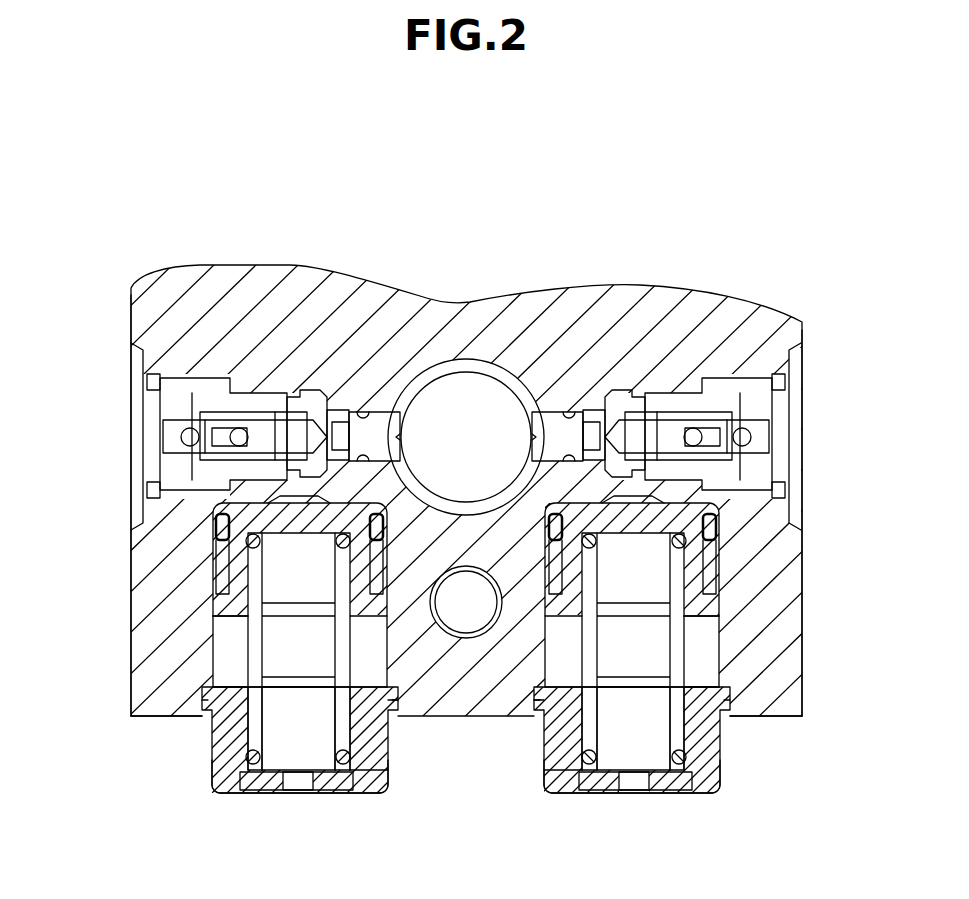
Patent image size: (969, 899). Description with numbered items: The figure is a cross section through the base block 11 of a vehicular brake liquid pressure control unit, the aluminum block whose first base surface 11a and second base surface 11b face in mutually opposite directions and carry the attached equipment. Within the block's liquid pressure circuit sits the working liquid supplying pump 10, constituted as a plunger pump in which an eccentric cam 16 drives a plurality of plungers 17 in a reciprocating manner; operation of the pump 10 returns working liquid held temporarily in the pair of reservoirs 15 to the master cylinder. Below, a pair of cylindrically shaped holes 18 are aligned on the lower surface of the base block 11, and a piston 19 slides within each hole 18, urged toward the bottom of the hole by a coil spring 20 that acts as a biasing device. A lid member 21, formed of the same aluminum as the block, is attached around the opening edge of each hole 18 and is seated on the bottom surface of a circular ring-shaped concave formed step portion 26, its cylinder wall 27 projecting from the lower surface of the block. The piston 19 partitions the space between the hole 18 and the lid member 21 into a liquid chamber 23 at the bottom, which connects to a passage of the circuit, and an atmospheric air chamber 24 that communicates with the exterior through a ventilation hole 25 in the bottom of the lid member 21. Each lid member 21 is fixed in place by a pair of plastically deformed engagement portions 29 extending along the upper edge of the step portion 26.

The working liquid supplying pump 10 is at (667, 388).
The base block 11 is at (742, 290).
The first base surface 11a is at (802, 660).
The second base surface 11b is at (130, 693).
The reservoir 15 is at (188, 656).
The eccentric cam 16 is at (462, 397).
The plunger 17 is at (361, 412).
The cylindrically shaped hole 18 is at (373, 653).
The piston 19 is at (230, 562).
The coil spring 20 is at (253, 734).
The lid member 21 is at (218, 790).
The liquid chamber 23 is at (213, 508).
The atmospheric air chamber 24 is at (312, 727).
The ventilation hole 25 is at (297, 778).
The concave formed step portion 26 is at (200, 716).
The cylinder wall 27 is at (388, 787).
The engagement portion 29 is at (395, 717).